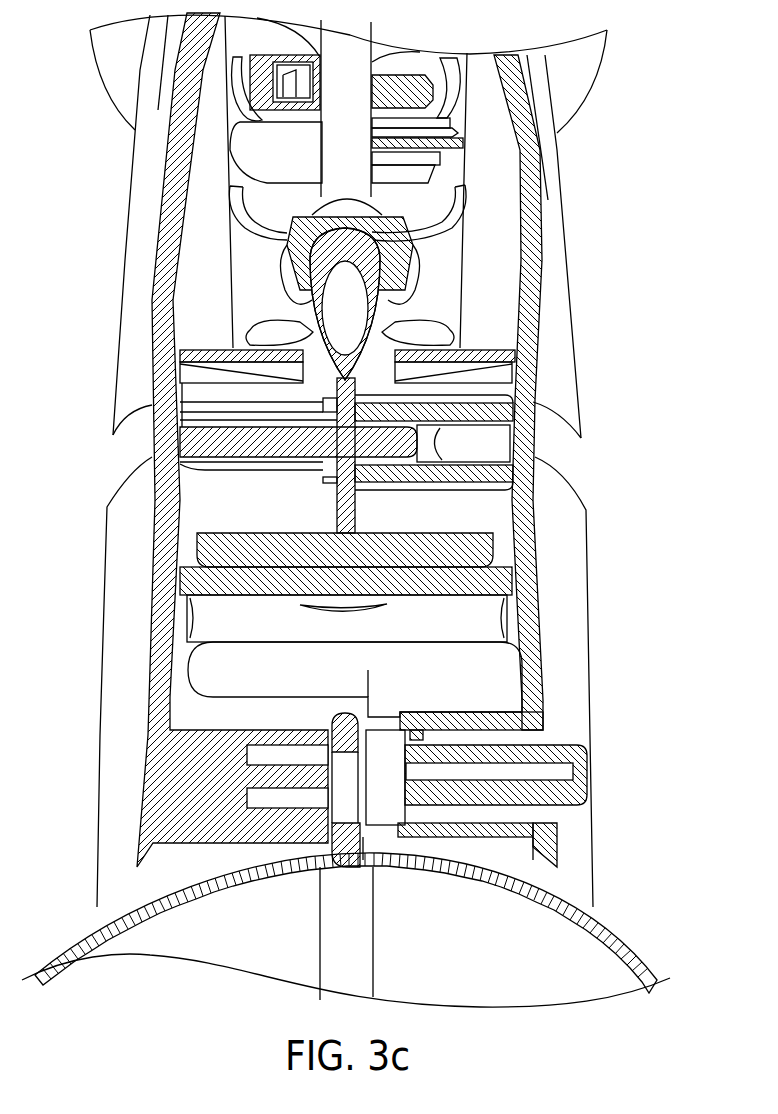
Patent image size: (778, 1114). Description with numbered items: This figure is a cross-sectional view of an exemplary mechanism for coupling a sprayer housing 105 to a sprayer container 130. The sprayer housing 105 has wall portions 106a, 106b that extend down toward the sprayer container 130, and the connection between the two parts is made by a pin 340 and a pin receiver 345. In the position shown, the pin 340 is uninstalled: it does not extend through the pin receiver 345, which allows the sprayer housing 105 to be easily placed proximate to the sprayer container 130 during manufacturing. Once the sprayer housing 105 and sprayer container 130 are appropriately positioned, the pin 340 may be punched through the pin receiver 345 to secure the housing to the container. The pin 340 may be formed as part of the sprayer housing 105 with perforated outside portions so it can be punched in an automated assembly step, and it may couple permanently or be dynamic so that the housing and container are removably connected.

The sprayer housing 105 is at (547, 183).
The first housing wall portion 106a is at (545, 693).
The second housing wall portion 106b is at (148, 723).
The sprayer container 130 is at (70, 940).
The pin 340 is at (578, 773).
The pin receiver 345 is at (343, 810).